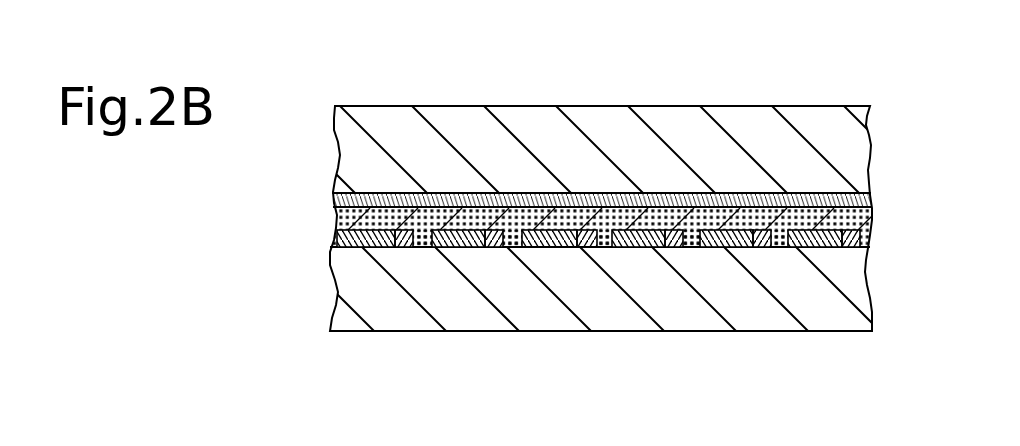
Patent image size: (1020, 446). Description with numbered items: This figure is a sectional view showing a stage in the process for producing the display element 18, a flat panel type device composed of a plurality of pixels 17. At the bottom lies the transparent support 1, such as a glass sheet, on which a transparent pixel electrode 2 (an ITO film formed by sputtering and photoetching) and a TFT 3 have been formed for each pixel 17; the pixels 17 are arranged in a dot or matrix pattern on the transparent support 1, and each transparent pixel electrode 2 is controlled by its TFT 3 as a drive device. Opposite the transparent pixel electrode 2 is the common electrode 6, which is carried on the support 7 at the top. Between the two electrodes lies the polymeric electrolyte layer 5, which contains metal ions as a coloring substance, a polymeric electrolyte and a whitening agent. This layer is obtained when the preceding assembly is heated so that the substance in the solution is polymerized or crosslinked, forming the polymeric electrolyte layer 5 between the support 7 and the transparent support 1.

The transparent support 1 is at (866, 310).
The transparent pixel electrode 2 is at (552, 230).
The TFT 3 is at (505, 246).
The polymeric electrolyte layer 5 is at (868, 226).
The common electrode 6 is at (870, 195).
The support 7 is at (858, 114).
The pixel 17 is at (557, 258).
The display element 18 is at (874, 96).